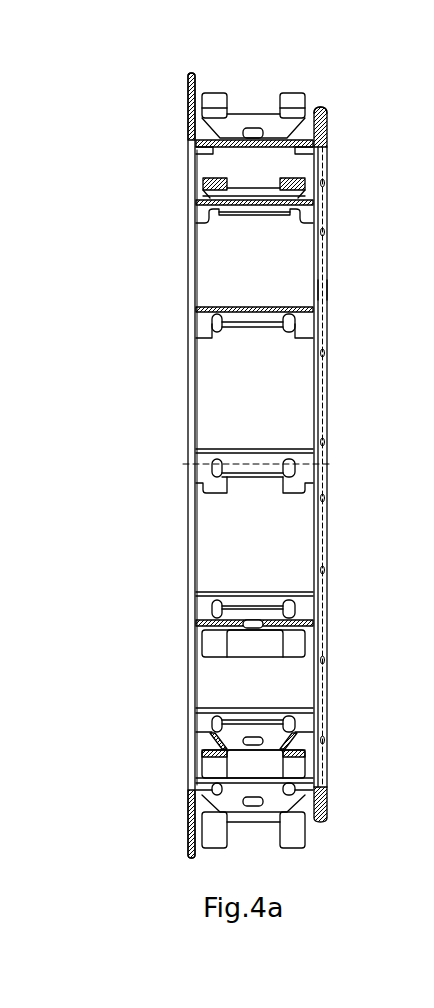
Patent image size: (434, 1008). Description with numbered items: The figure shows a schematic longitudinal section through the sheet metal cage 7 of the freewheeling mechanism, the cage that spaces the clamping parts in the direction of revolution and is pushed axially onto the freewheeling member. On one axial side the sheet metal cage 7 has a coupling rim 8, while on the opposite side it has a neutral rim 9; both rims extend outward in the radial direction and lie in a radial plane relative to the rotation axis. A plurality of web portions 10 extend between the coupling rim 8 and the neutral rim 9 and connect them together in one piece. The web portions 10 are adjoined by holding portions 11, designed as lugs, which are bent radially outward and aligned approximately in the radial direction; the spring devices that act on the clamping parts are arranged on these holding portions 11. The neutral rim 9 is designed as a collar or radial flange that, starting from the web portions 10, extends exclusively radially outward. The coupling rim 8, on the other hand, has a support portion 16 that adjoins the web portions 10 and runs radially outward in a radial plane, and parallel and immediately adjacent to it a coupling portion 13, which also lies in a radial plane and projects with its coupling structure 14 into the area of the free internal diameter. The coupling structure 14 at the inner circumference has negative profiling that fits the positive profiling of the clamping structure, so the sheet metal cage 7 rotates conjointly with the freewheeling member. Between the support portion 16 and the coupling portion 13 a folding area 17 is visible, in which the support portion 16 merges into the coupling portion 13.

The sheet metal cage 7 is at (134, 185).
The coupling rim 8 is at (323, 415).
The neutral rim 9 is at (188, 320).
The web portions 10 is at (268, 210).
The holding portions 11 is at (216, 647).
The coupling portion 13 is at (327, 143).
The coupling structure 14 is at (323, 292).
The support portion 16 is at (313, 118).
The folding area 17 is at (317, 107).